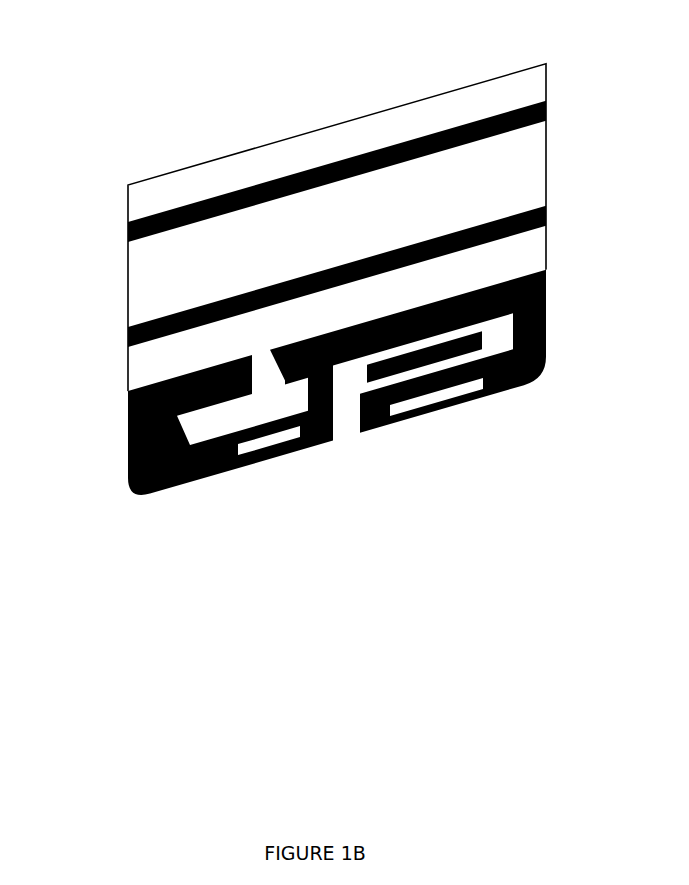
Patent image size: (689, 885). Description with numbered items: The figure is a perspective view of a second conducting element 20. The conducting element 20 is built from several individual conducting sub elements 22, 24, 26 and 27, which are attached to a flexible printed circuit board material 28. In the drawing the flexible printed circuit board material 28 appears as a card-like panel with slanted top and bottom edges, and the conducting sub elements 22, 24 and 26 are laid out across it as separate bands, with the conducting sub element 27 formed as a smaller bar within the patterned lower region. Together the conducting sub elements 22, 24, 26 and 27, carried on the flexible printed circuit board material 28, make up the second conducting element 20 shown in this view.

The second conducting element 20 is at (118, 153).
The conducting sub element 22 is at (337, 171).
The conducting sub element 24 is at (337, 276).
The conducting sub element 26 is at (337, 385).
The conducting sub element 27 is at (424, 356).
The flexible printed circuit board material 28 is at (337, 282).